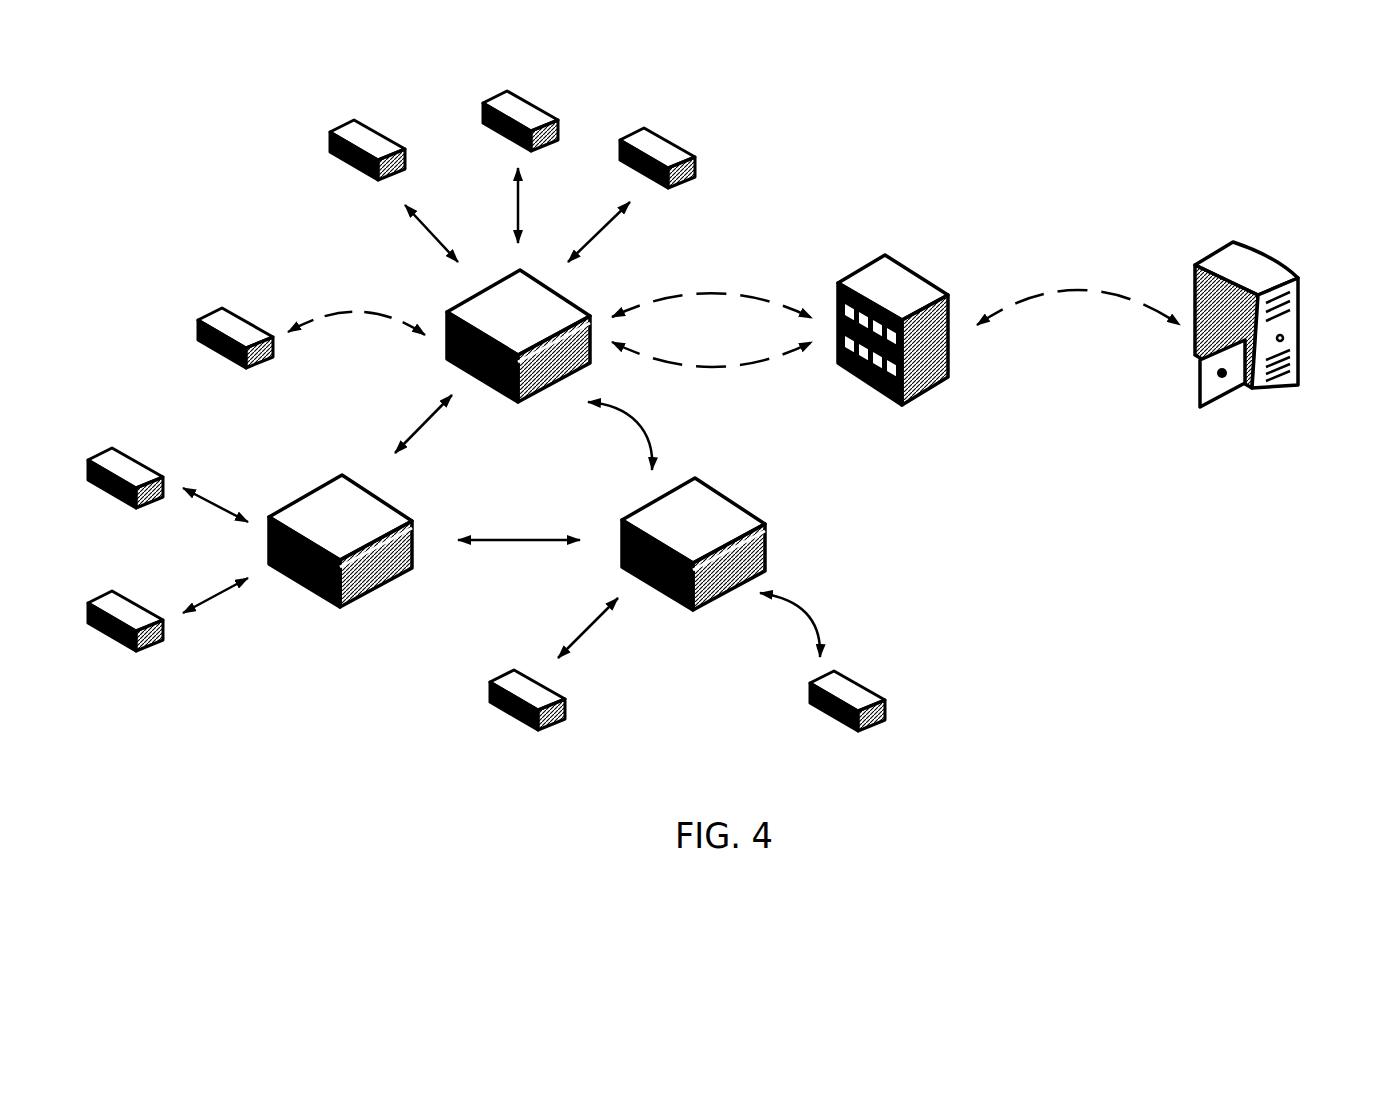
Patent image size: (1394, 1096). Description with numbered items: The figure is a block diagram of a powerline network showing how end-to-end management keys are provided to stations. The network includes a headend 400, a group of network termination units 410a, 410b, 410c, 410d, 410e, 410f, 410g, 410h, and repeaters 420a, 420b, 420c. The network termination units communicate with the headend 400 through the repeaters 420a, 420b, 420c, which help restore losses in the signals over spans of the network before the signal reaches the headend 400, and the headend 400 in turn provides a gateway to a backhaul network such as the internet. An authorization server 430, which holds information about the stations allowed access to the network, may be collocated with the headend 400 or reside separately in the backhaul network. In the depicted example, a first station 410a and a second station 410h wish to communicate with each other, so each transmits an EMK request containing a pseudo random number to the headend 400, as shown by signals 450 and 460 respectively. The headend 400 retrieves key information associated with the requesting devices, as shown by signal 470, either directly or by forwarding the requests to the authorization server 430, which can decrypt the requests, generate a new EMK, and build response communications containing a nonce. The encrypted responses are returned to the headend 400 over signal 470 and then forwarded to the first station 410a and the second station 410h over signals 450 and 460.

The headend 400 is at (893, 262).
The first station 410a is at (236, 314).
The network termination unit 410b is at (357, 124).
The network termination unit 410c is at (517, 96).
The network termination unit 410d is at (673, 144).
The network termination unit 410e is at (126, 452).
The network termination unit 410f is at (120, 580).
The network termination unit 410g is at (542, 727).
The second station 410h is at (858, 731).
The repeater 420a is at (387, 504).
The repeater 420b is at (572, 300).
The repeater 420c is at (694, 478).
The authorization server 430 is at (1268, 260).
The signal 450 is at (355, 312).
The signal 460 is at (683, 365).
The signal 470 is at (1102, 290).